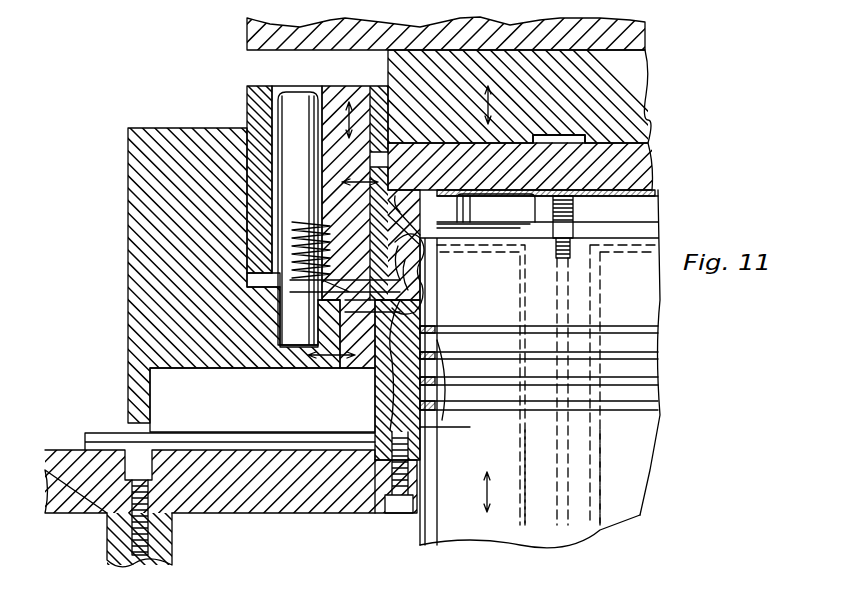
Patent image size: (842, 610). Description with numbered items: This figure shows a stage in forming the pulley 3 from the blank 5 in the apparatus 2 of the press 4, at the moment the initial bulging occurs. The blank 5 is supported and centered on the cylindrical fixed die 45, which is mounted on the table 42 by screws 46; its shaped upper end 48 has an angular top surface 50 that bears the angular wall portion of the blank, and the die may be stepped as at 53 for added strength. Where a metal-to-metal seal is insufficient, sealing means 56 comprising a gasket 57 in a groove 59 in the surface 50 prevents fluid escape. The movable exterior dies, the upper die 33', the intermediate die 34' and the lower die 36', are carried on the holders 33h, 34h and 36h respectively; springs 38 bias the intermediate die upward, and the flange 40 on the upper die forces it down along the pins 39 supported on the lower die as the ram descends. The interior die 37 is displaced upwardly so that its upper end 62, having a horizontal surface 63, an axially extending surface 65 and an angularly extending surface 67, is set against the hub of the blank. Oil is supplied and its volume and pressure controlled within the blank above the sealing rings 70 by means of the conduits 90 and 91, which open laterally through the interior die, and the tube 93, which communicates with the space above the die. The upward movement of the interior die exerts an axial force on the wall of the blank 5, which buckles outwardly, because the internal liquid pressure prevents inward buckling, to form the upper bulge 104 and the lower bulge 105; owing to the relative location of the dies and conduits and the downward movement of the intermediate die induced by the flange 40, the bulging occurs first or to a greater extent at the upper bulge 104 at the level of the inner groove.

The apparatus 2 is at (68, 450).
The pulley 3 is at (650, 73).
The press 4 is at (103, 548).
The blank 5 is at (655, 198).
The holder for die 33 33h is at (652, 108).
The upper die 33' is at (524, 162).
The holder for die 34 34h is at (258, 90).
The intermediate die 34' is at (311, 177).
The holder for die 36 36h is at (128, 216).
The lower die 36' is at (290, 344).
The interior die 37 is at (420, 538).
The springs 38 is at (331, 245).
The pins 39 is at (285, 100).
The flange 40 is at (247, 42).
The table 42 is at (75, 515).
The fixed die 45 is at (375, 425).
The screws 46 is at (390, 515).
The upper end of die 45 48 is at (395, 380).
The top surface 50 is at (420, 295).
The step 53 is at (372, 370).
The sealing means 56 is at (425, 305).
The gasket 57 is at (365, 300).
The groove 59 is at (425, 318).
The upper end of die 37 62 is at (660, 301).
The horizontal surface 63 is at (635, 222).
The axially extending surface 65 is at (470, 205).
The angularly extending surface 67 is at (470, 228).
The sealing rings 70 is at (447, 405).
The conduit 90 is at (525, 455).
The conduit 91 is at (598, 470).
The tube 93 is at (578, 204).
The upper bulge 104 is at (404, 208).
The lower bulge 105 is at (345, 282).